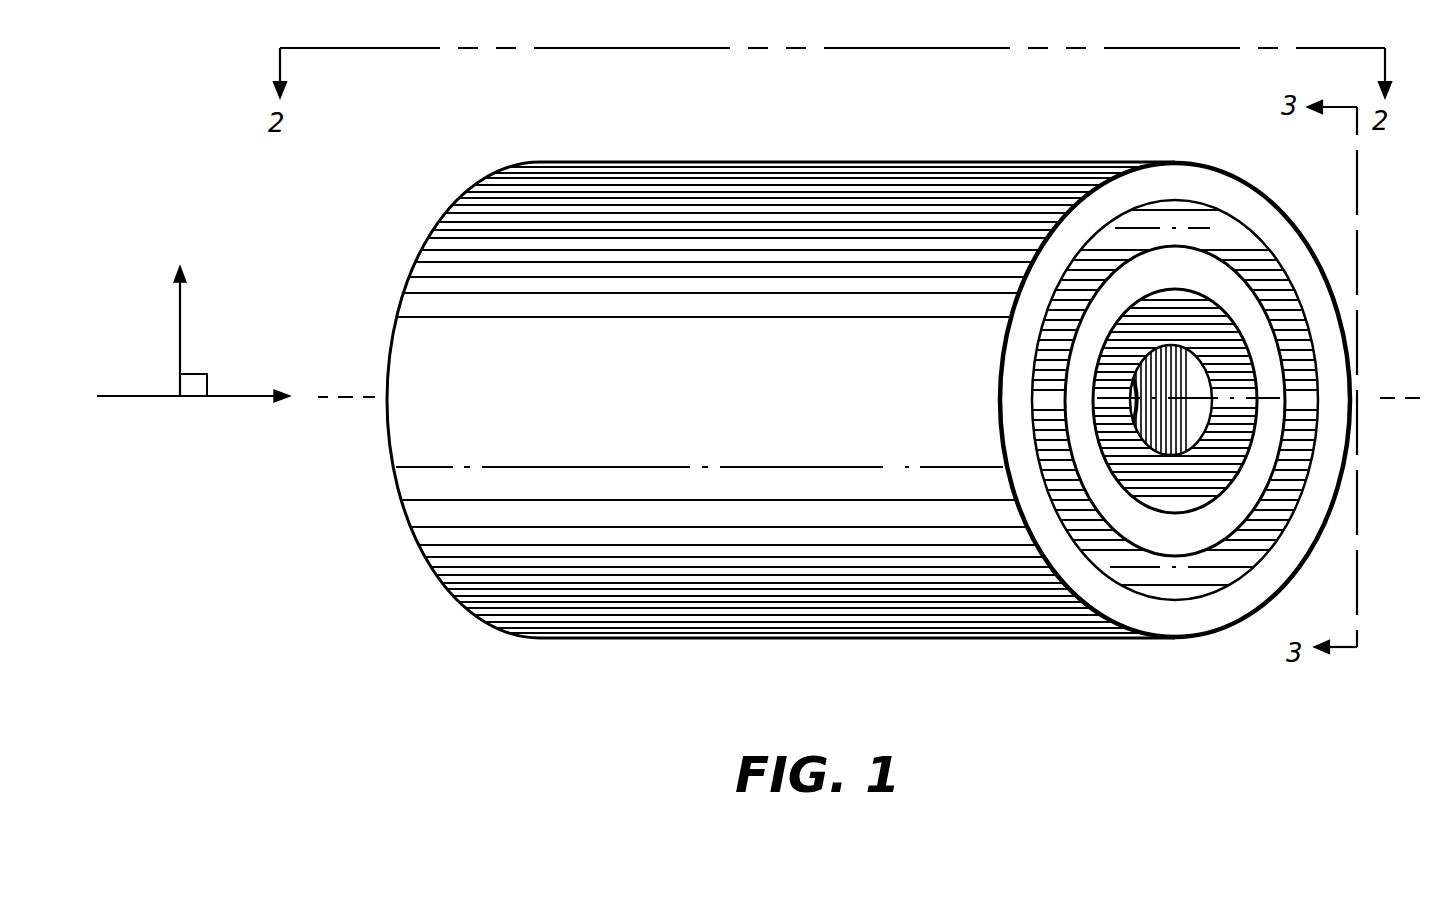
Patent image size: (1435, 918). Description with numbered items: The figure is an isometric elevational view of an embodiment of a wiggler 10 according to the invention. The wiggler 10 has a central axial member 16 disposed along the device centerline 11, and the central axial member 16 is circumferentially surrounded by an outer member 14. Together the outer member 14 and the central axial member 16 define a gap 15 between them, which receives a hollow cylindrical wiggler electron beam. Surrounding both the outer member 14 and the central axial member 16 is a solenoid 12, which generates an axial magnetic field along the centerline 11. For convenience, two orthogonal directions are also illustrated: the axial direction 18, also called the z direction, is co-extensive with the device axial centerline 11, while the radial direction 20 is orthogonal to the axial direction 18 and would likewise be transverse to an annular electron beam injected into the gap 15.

The wiggler 10 is at (290, 533).
The device centerline 11 is at (348, 396).
The solenoid 12 is at (758, 394).
The outer member 14 is at (1120, 235).
The gap 15 is at (1173, 307).
The central axial member 16 is at (1147, 343).
The axial direction 18 is at (131, 396).
The radial direction 20 is at (182, 317).